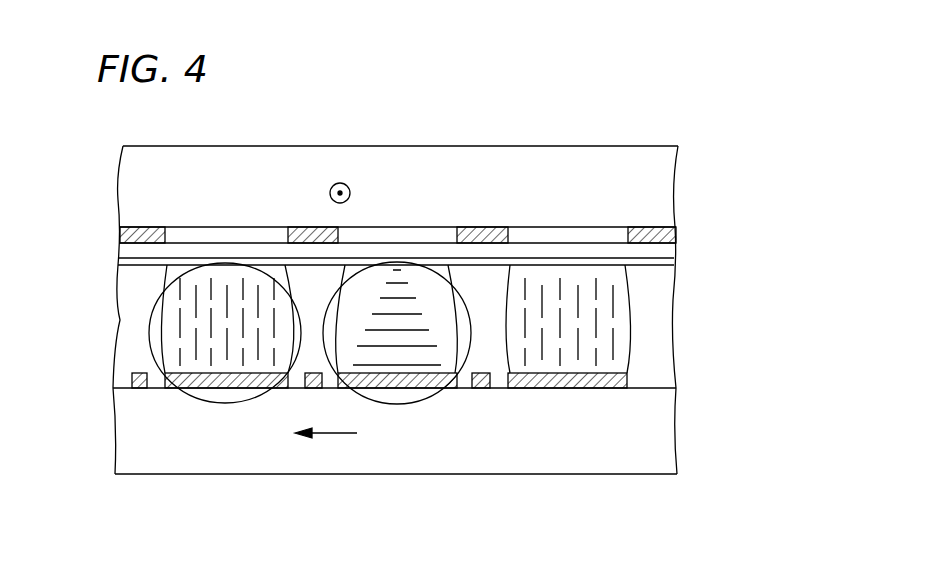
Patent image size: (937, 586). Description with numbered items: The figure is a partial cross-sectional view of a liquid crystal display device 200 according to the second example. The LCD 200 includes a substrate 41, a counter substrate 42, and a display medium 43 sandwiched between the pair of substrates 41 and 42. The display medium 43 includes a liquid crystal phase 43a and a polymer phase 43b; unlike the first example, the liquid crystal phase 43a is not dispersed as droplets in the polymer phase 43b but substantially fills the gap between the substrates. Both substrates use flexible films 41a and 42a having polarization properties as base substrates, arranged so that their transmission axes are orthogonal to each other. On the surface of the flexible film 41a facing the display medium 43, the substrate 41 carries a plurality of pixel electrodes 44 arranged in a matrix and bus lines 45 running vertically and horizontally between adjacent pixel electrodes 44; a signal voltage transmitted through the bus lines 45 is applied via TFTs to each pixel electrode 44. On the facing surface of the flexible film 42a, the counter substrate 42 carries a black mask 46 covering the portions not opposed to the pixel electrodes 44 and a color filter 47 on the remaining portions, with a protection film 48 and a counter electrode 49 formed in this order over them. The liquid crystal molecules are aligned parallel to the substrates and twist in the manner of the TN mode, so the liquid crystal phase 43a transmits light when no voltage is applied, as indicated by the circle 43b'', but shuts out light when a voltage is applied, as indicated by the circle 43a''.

The liquid crystal display device 200 is at (671, 114).
The substrate 41 is at (703, 375).
The flexible film 41a is at (577, 450).
The counter substrate 42 is at (703, 148).
The flexible film 42a is at (565, 168).
The display medium 43 is at (703, 267).
The liquid crystal phase 43a is at (227, 399).
The circle 43a'' is at (171, 334).
The polymer phase 43b is at (367, 399).
The circle 43b'' is at (397, 414).
The pixel electrode 44 is at (407, 390).
The bus line 45 is at (481, 390).
The black mask 46 is at (472, 230).
The color filter 47 is at (413, 233).
The protection film 48 is at (367, 255).
The counter electrode 49 is at (183, 253).